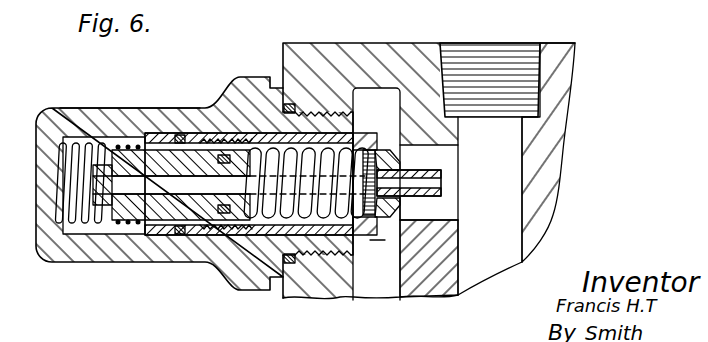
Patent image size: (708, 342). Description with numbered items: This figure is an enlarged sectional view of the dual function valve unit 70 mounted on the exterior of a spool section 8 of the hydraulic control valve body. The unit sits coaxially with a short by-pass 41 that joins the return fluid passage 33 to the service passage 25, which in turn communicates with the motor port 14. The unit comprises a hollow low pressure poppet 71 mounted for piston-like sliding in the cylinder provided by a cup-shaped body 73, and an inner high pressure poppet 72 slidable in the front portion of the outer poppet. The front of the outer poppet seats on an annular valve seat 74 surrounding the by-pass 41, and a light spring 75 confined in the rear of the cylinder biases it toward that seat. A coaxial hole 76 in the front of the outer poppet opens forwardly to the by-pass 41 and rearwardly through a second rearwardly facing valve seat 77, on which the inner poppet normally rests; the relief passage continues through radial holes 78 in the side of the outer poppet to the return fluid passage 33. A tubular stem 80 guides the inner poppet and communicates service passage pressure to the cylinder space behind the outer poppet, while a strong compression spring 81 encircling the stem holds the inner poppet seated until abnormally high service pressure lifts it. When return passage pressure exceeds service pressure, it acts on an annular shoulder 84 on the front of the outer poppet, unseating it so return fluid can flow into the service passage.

The dual function valve unit 70 is at (138, 289).
The cup-shaped body 73 is at (166, 108).
The strong compression spring 81 is at (266, 250).
The stem 80 is at (240, 212).
The spring 75 is at (86, 228).
The annular valve seat 74 is at (405, 155).
The inner high pressure poppet 72 is at (368, 150).
The second rearwardly facing valve seat 77 is at (378, 152).
The radial holes 78 is at (362, 232).
The by-pass 41 is at (447, 176).
The coaxial hole 76 is at (404, 206).
The spool section 8 is at (307, 43).
The hollow low pressure poppet 71 is at (382, 225).
The return fluid passage 33 is at (388, 284).
The motor port 14 is at (497, 60).
The service passage 25 is at (520, 203).
The annular shoulder 84 is at (440, 236).